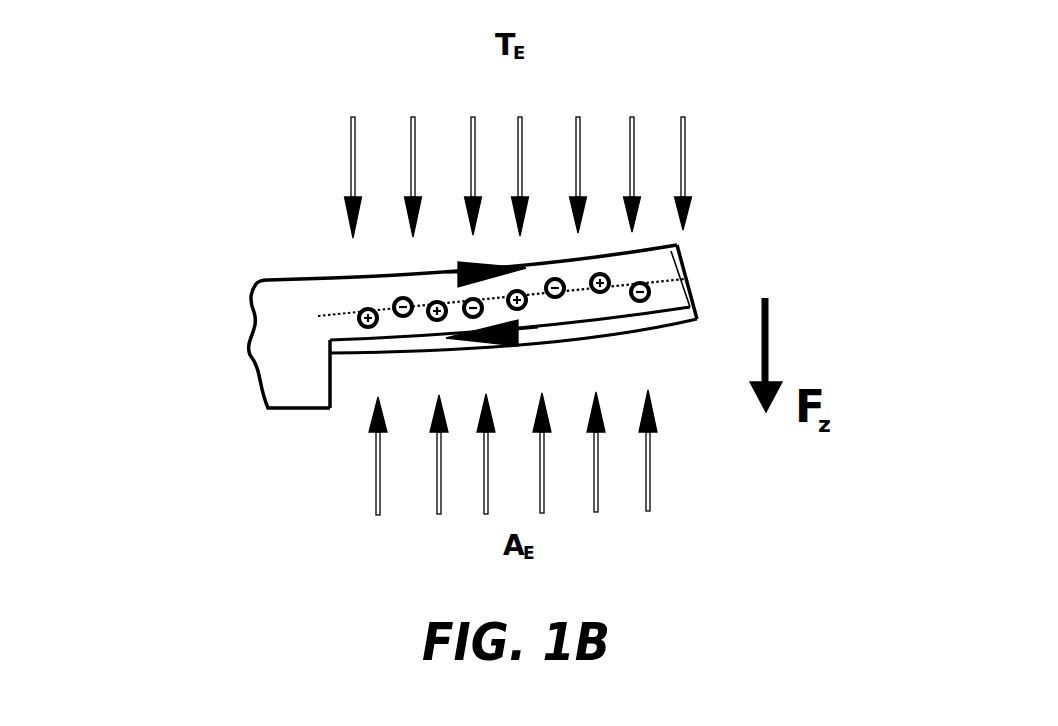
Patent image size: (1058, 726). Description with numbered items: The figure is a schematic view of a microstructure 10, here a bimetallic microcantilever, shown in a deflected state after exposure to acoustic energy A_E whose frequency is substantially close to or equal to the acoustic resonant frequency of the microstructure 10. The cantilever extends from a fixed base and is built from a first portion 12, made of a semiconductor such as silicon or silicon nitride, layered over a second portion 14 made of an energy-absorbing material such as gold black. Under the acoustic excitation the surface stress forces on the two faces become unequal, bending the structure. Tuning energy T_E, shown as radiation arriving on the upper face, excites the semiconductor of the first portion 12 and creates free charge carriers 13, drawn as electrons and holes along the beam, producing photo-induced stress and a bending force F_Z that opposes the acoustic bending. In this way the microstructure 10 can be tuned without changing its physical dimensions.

The microstructure 10 is at (773, 151).
The first portion 12 is at (343, 287).
The free charge carriers 13 is at (609, 280).
The second portion 14 is at (352, 347).